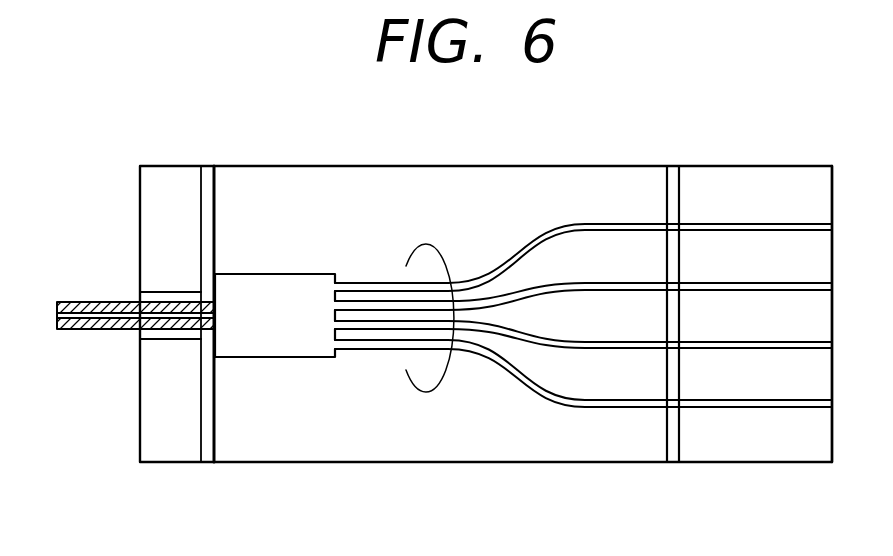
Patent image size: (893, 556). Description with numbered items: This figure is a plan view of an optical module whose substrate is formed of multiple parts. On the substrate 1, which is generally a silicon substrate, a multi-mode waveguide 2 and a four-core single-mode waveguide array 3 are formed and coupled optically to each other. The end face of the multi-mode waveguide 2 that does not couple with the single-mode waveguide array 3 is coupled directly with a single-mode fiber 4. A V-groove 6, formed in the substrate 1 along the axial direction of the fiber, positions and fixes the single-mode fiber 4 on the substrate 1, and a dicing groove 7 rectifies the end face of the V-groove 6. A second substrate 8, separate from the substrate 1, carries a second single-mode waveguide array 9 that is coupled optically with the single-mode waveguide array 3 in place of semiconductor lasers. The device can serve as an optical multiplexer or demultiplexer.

The substrate 1 is at (442, 462).
The multi-mode waveguide 2 is at (263, 285).
The single-mode waveguide array 3 is at (426, 245).
The single-mode fiber 4 is at (87, 333).
The V-groove 6 is at (162, 299).
The dicing groove 7 is at (205, 462).
The second substrate 8 is at (712, 207).
The second single-mode waveguide array 9 is at (785, 227).